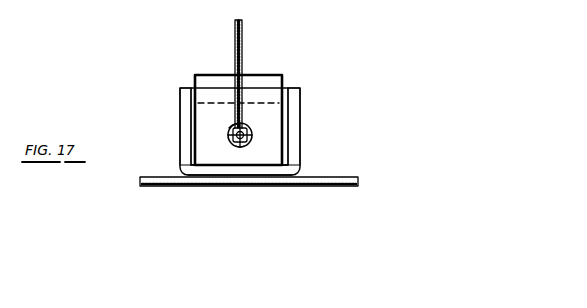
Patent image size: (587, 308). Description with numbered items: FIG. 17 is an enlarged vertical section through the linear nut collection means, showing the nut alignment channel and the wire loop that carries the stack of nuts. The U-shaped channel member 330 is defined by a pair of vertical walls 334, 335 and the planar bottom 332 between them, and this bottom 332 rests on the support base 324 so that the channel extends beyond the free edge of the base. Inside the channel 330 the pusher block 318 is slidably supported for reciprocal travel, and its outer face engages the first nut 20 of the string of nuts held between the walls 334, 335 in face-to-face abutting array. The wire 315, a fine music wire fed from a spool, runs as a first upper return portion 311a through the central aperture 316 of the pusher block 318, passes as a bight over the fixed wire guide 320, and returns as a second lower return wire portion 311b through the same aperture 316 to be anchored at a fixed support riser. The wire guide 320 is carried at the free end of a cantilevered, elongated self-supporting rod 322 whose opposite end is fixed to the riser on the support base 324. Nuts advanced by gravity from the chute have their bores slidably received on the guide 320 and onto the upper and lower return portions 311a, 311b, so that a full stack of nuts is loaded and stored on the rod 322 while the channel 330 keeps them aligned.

The nut 20 is at (269, 100).
The first upper return portion 311a is at (229, 128).
The second lower return wire portion 311b is at (236, 146).
The wire 315 is at (243, 32).
The central aperture 316 is at (233, 137).
The pusher block 318 is at (196, 77).
The wire guide 320 is at (252, 133).
The rod 322 is at (246, 141).
The support base 324 is at (358, 182).
The U-shaped channel member 330 is at (302, 100).
The planar bottom 332 is at (203, 166).
The vertical wall 334 is at (300, 116).
The vertical wall 335 is at (180, 99).